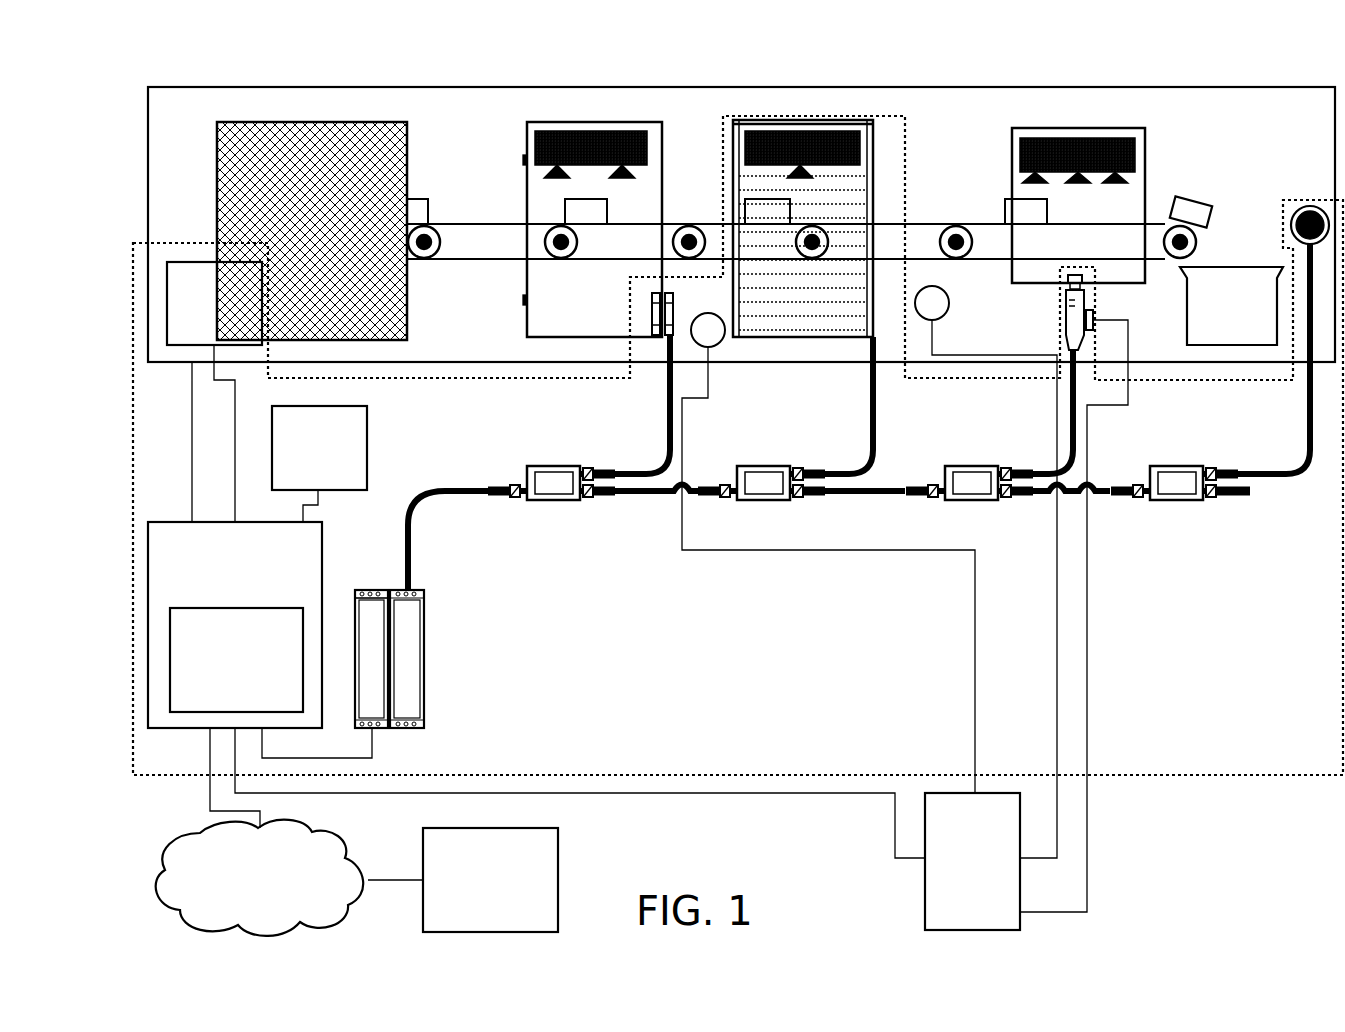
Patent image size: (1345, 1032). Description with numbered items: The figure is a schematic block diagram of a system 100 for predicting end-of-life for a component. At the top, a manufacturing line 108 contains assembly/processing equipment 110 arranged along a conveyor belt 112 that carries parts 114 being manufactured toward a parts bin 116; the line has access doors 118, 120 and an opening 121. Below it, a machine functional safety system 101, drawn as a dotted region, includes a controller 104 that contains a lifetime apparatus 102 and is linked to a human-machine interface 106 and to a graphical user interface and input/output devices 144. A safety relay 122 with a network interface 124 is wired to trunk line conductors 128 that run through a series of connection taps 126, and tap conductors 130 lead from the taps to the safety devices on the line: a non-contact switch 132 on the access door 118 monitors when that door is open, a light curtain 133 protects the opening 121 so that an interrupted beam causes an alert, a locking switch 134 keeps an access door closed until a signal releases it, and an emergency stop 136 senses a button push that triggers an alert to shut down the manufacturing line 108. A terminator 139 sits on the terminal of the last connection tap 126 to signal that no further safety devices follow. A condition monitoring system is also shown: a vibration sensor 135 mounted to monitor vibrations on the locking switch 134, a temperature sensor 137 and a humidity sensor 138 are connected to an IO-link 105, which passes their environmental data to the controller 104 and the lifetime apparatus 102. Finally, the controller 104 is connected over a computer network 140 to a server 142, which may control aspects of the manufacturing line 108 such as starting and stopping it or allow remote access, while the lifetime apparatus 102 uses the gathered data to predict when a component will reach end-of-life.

The system 100 is at (205, 69).
The machine functional safety system 101 is at (188, 772).
The lifetime apparatus 102 is at (218, 699).
The controller 104 is at (216, 584).
The IO-link 105 is at (953, 887).
The human-machine interface 106 is at (195, 330).
The manufacturing line 108 is at (205, 120).
The assembly/processing equipment 110 is at (332, 244).
The conveyor belt 112 is at (463, 262).
The parts 114 is at (1195, 196).
The parts bin 116 is at (1252, 317).
The access door 118 is at (578, 326).
The access door 120 is at (1012, 283).
The opening 121 is at (788, 314).
The safety relay 122 is at (424, 665).
The network interface 124 is at (378, 590).
The connection taps 126 is at (550, 465).
The trunk line conductors 128 is at (660, 495).
The tap conductors 130 is at (668, 402).
The non-contact switch 132 is at (652, 312).
The light curtain 133 is at (877, 215).
The locking switch 134 is at (1062, 318).
The vibration sensor 135 is at (1096, 309).
The emergency stop 136 is at (1300, 208).
The temperature sensor 137 is at (945, 318).
The humidity sensor 138 is at (721, 341).
The terminator 139 is at (1250, 496).
The computer network 140 is at (241, 918).
The server 142 is at (471, 904).
The graphical user interface and input/output devices 144 is at (301, 486).